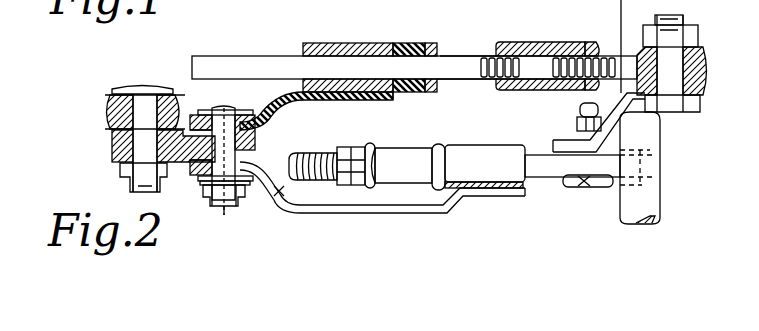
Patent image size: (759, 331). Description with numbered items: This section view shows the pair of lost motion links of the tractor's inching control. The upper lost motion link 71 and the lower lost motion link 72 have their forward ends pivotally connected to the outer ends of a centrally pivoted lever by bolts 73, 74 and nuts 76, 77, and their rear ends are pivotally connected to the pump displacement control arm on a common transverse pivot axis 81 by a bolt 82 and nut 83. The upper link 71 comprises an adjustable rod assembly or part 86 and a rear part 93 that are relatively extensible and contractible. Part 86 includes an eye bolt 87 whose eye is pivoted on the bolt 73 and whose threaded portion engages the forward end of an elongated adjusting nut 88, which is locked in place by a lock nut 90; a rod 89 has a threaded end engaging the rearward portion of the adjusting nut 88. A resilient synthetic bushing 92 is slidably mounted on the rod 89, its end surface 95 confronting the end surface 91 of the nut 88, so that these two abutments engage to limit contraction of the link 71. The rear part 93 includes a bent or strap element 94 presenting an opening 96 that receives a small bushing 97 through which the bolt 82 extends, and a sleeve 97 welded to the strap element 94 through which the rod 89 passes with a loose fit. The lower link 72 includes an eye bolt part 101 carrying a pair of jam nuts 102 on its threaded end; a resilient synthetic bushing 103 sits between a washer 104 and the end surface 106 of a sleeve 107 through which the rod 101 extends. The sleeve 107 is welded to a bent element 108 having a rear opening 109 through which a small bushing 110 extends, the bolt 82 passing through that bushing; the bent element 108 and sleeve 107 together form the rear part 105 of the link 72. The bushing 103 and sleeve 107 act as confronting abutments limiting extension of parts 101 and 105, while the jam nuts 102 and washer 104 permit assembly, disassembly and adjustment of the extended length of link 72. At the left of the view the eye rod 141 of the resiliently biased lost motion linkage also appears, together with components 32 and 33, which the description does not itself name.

The bolt 32 is at (138, 88).
The eye rod 141 is at (105, 112).
The nut 33 is at (125, 178).
The bolt 82 is at (226, 113).
The bent element 94 is at (270, 112).
The sleeve 97 is at (313, 43).
The upper lost motion link 71 is at (388, 43).
The resilient synthetic bushing 92 is at (395, 43).
The end surface 95 is at (437, 50).
The adjustable rod assembly 86 is at (466, 56).
The end surface 91 is at (488, 50).
The elongated adjusting nut 88 is at (545, 42).
The lock nut 90 is at (590, 42).
The rod 89 is at (453, 79).
The nut 76 is at (699, 34).
The eye bolt 87 is at (710, 59).
The nut 77 is at (580, 124).
The bolt 73 is at (674, 126).
The bolt 74 is at (604, 183).
The eye bolt part 101 is at (585, 180).
The opening 96 is at (256, 135).
The rear part 93 is at (347, 103).
The jam nuts 102 is at (334, 150).
The resilient synthetic bushing 103 is at (400, 152).
The end surface 106 is at (436, 146).
The sleeve 107 is at (492, 152).
The small bushing 110 is at (204, 182).
The nut 83 is at (211, 203).
The common transverse pivot axis 81 is at (229, 200).
The opening 109 is at (244, 196).
The washer 104 is at (359, 190).
The bent element 108 is at (432, 212).
The rear part 105 is at (473, 203).
The lower lost motion link 72 is at (513, 208).